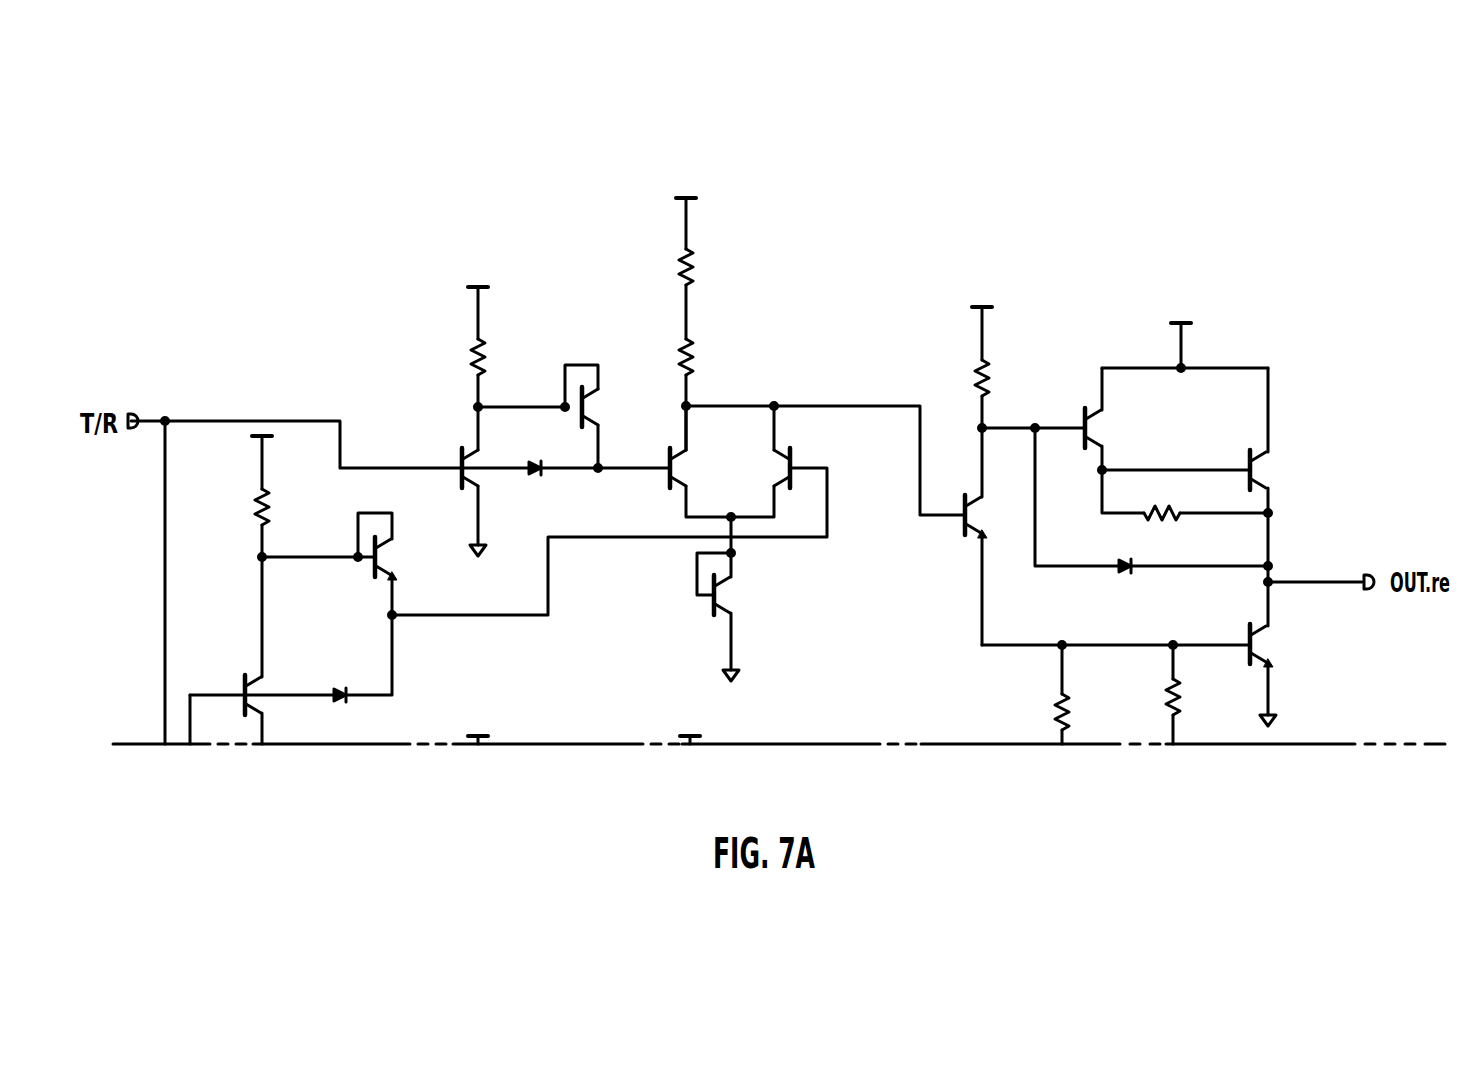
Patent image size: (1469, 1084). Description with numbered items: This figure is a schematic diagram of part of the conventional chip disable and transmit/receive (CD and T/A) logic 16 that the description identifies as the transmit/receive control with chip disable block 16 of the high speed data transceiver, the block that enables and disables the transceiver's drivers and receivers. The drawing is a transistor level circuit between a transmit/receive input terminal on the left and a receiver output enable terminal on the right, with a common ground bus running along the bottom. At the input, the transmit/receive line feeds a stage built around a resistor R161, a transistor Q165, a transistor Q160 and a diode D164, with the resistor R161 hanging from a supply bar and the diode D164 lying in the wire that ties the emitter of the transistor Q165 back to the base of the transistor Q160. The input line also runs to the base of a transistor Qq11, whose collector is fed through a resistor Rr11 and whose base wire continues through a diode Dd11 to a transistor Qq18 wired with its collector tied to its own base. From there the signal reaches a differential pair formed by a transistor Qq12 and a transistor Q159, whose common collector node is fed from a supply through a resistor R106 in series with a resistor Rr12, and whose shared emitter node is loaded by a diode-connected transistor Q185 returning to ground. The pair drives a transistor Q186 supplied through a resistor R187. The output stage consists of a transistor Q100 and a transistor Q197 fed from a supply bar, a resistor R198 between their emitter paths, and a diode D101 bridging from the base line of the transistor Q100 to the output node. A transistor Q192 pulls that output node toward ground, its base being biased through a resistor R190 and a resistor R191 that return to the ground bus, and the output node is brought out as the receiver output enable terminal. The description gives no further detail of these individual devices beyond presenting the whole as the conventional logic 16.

The transmit/receive control with chip disable block 16 is at (1381, 413).
The resistor R161 is at (313, 556).
The transistor Q165 is at (394, 564).
The transistor Q160 is at (262, 705).
The diode D164 is at (360, 658).
The resistor Rr11 is at (499, 368).
The transistor Qq11 is at (495, 502).
The diode Dd11 is at (591, 450).
The transistor Qq18 is at (602, 416).
The resistor R106 is at (710, 268).
The resistor Rr12 is at (710, 394).
The transistor Qq12 is at (701, 461).
The transistor Q159 is at (760, 461).
The transistor Q185 is at (732, 617).
The resistor R187 is at (1003, 402).
The transistor Q186 is at (990, 570).
The transistor Q100 is at (1116, 440).
The transistor Q197 is at (1276, 475).
The resistor R198 is at (1206, 499).
The diode D101 is at (1151, 500).
The transistor Q192 is at (1277, 654).
The resistor R190 is at (1084, 694).
The resistor R191 is at (1195, 694).